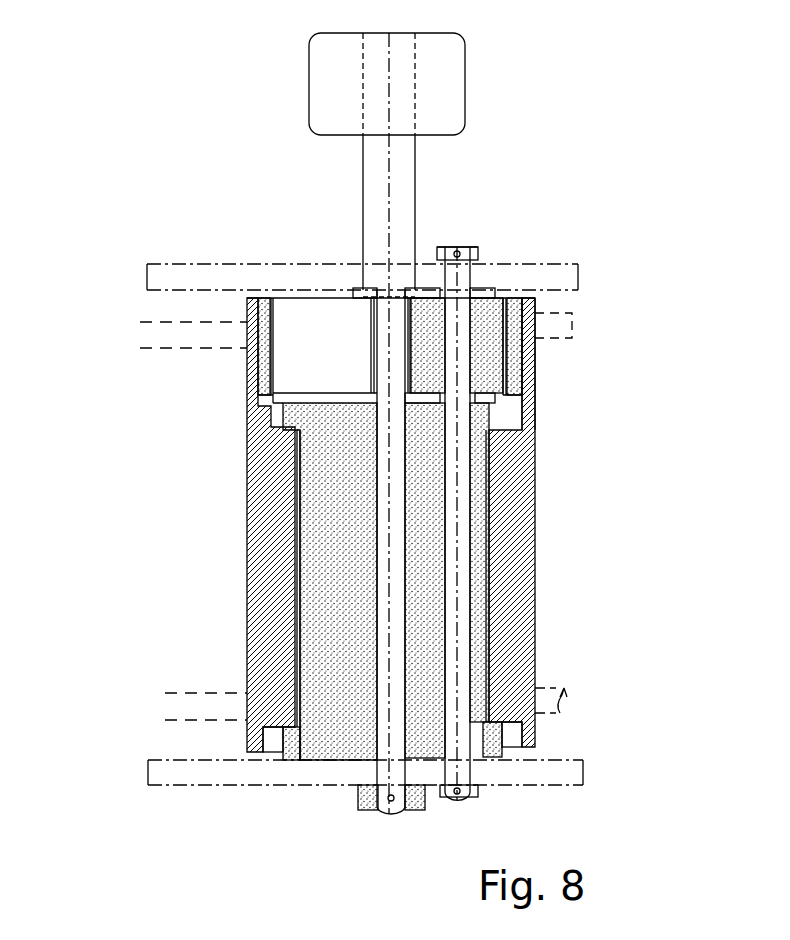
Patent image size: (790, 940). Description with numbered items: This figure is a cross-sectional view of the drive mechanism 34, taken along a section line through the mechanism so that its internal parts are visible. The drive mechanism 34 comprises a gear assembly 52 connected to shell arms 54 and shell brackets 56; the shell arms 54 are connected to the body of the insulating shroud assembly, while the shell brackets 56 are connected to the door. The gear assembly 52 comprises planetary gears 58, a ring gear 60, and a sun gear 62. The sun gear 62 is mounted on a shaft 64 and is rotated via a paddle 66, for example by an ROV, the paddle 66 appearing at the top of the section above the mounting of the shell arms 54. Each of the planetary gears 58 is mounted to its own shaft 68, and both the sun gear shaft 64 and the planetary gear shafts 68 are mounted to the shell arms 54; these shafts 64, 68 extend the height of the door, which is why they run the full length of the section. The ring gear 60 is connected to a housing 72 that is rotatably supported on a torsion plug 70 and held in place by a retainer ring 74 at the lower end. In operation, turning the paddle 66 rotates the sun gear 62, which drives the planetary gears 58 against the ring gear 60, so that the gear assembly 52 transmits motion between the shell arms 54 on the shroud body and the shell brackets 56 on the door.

The drive mechanism 34 is at (624, 271).
The gear assembly 52 is at (570, 587).
The shell arms 54 is at (153, 281).
The shell brackets 56 is at (153, 335).
The planetary gears 58 is at (493, 294).
The ring gear 60 is at (517, 317).
The sun gear 62 is at (368, 322).
The shaft 64 is at (385, 447).
The paddle 66 is at (307, 123).
The shaft 68 is at (478, 250).
The torsion plug 70 is at (484, 463).
The housing 72 is at (533, 377).
The retainer ring 74 is at (504, 737).